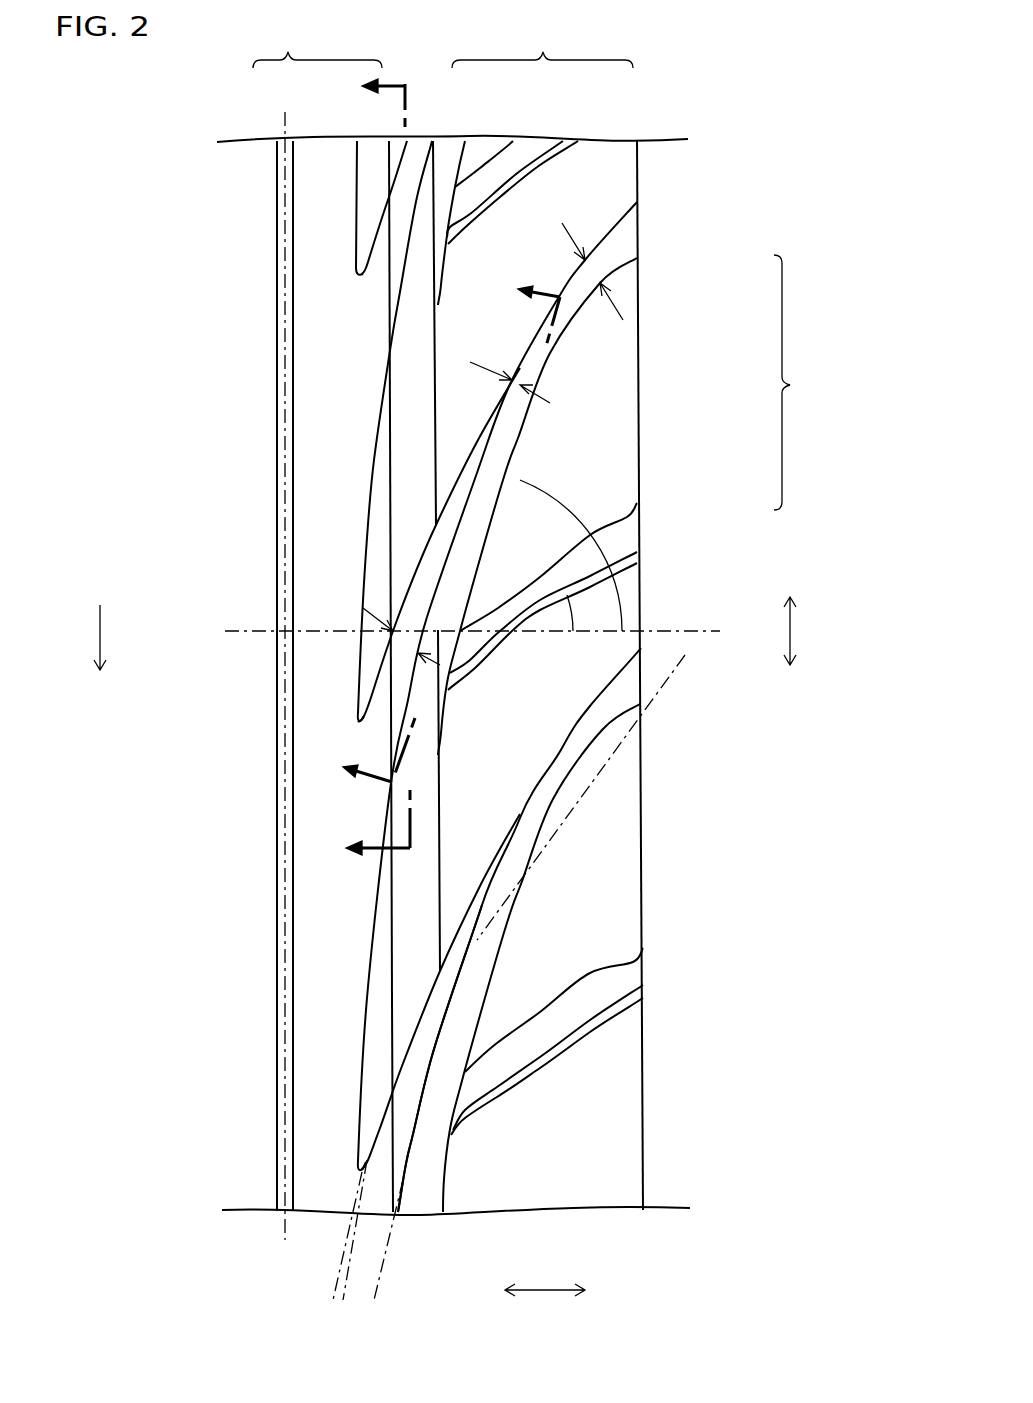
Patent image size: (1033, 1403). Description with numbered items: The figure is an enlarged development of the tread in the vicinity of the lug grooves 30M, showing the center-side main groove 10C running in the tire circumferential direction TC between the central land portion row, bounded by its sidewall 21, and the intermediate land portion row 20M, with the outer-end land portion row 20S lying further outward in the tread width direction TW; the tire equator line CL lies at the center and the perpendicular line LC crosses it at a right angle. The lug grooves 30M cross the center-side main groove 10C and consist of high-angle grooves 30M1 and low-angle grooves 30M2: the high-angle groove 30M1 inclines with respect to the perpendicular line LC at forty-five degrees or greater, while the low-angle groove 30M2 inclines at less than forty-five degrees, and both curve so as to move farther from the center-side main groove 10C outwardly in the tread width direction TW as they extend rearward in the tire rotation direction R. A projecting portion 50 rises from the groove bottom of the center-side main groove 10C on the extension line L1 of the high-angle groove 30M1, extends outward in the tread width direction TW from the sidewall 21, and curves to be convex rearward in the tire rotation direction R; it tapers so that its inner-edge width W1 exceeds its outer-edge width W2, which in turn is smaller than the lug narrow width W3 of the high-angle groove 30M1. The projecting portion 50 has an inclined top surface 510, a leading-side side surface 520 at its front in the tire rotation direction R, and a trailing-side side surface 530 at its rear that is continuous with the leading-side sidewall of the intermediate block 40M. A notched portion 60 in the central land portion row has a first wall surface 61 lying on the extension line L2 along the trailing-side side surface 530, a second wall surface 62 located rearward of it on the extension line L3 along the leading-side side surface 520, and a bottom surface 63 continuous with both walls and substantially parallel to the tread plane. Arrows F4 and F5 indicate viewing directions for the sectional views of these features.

The outer-end land portion row 20S is at (317, 48).
The intermediate land portion row 20M is at (542, 48).
The tire equator line CL is at (284, 661).
The view direction arrow F5 is at (361, 466).
The view direction arrow F4 is at (436, 524).
The projecting portion 50 is at (417, 150).
The notched portion 60 is at (372, 188).
The first wall surface 61 is at (370, 690).
The second wall surface 62 is at (380, 462).
The bottom surface 63 is at (378, 558).
The intermediate block 40M is at (621, 181).
The lug narrow width W3 is at (592, 263).
The outer-edge width W2 is at (529, 389).
The inner-edge width W1 is at (440, 663).
The high-angle groove 30M1 is at (632, 240).
The low-angle groove 30M2 is at (635, 525).
The lug groove 30M is at (809, 382).
The sidewall 21 is at (388, 346).
The center-side main groove 10C is at (400, 912).
The perpendicular line LC is at (690, 630).
The tire circumferential direction TC is at (805, 631).
The tire rotation direction R is at (89, 637).
The tread width direction TW is at (545, 1277).
The top surface 510 is at (398, 1108).
The leading-side side surface 520 is at (405, 1150).
The trailing-side side surface 530 is at (398, 1073).
The extension line L1 is at (378, 1289).
The extension line L2 is at (342, 1290).
The extension line L3 is at (355, 1265).